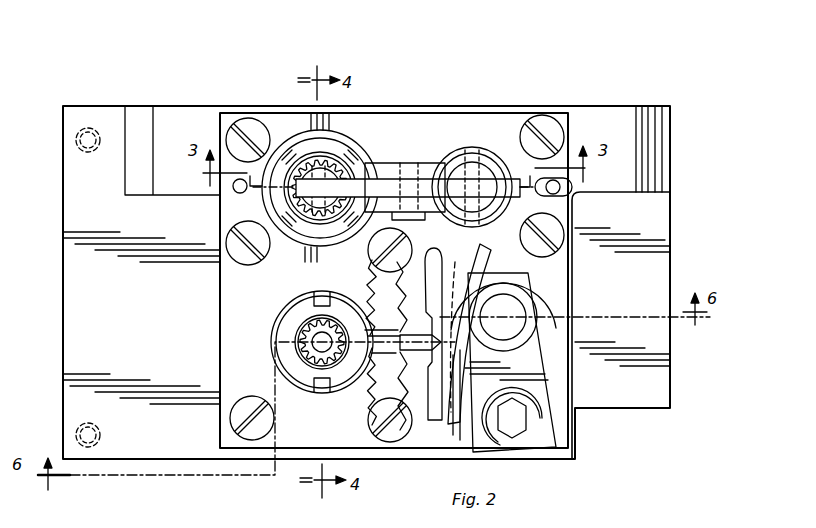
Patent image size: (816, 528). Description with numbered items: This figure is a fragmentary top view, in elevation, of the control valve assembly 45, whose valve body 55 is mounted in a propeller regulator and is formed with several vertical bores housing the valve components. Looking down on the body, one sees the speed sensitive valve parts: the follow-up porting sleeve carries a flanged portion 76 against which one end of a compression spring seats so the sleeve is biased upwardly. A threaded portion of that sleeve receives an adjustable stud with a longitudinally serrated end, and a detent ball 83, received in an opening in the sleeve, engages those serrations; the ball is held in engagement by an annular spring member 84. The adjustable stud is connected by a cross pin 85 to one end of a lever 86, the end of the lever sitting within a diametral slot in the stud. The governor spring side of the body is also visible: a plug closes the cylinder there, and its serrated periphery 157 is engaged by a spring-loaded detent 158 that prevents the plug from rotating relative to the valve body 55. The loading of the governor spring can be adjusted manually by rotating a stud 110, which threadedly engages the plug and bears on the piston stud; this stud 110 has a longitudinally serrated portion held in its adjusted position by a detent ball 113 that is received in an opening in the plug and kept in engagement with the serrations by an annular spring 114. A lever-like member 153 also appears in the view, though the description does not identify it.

The control valve assembly 45 is at (400, 70).
The valve body 55 is at (632, 100).
The flanged portion 76 is at (298, 234).
The detent ball 83 is at (347, 218).
The annular spring member 84 is at (366, 166).
The cross pin 85 is at (333, 162).
The lever 86 is at (392, 186).
The stud 110 is at (300, 348).
The detent ball 113 is at (346, 338).
The annular spring 114 is at (298, 330).
The lever 153 is at (444, 266).
The serrated periphery 157 is at (426, 262).
The detent 158 is at (421, 349).